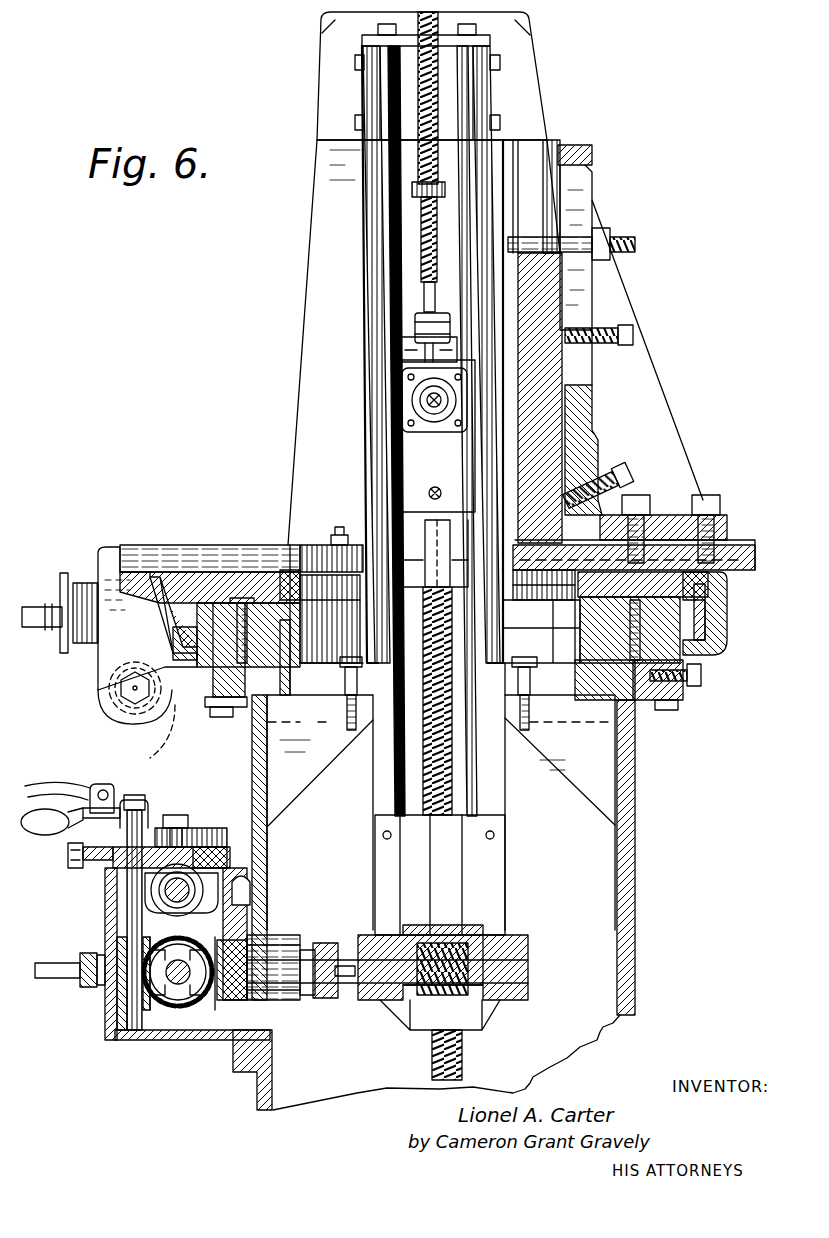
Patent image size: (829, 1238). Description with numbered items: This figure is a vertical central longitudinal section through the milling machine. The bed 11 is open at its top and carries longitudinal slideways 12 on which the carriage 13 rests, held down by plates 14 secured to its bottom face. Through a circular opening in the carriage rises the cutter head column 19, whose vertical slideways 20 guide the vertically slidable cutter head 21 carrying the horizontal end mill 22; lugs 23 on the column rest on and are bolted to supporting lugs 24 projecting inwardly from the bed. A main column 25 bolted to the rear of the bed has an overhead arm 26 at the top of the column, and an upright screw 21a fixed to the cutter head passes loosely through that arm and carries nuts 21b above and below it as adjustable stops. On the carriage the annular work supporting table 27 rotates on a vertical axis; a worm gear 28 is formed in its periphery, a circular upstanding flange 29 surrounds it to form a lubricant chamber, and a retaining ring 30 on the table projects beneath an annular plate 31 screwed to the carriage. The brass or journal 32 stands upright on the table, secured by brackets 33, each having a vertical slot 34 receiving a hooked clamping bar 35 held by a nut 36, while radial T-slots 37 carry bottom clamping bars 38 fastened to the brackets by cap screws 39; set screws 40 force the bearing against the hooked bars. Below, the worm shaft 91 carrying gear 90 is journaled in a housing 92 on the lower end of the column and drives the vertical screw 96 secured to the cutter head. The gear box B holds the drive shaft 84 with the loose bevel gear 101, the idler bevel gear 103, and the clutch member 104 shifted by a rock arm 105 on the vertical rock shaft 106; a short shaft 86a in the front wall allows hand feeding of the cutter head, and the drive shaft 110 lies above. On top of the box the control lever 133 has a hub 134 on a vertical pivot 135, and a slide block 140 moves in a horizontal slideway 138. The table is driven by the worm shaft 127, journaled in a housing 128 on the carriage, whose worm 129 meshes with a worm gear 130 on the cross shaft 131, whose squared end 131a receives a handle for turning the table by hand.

The overhead arm 26 is at (330, 40).
The upright screw 21a is at (415, 92).
The vertical slideways 20 is at (462, 92).
The main column 25 is at (318, 270).
The cutter head column 19 is at (365, 370).
The nuts 21b is at (410, 186).
The end mill 22 is at (432, 400).
The cutter head 21 is at (410, 455).
The vertical slot 34 is at (585, 283).
The clamping bar 35 is at (570, 240).
The nut 36 is at (612, 237).
The set screws 40 is at (633, 338).
The brackets 33 is at (592, 410).
The brass or journal 32 is at (548, 430).
The bottom clamping bars 38 is at (722, 532).
The cap screws 39 is at (703, 497).
The T-slots 37 is at (752, 565).
The work supporting table 27 is at (210, 580).
The annular plate 31 is at (700, 608).
The retaining ring 30 is at (710, 633).
The carriage 13 is at (688, 664).
The plates 14 is at (682, 700).
The longitudinal slideways 12 is at (630, 705).
The bed 11 is at (636, 770).
The supporting lugs 24 is at (312, 745).
The laterally projecting lugs 23 is at (340, 700).
The screw 96 is at (452, 790).
The housing 92 is at (520, 935).
The worm shaft 91 is at (380, 1002).
The gear 90 is at (325, 945).
The bevel gear 101 is at (205, 1035).
The gear box B is at (178, 1045).
The vertical rock shaft 106 is at (130, 905).
The control lever 133 is at (62, 790).
The vertical pivot 135 is at (168, 815).
The hub portion 134 is at (190, 828).
The slide block 140 is at (212, 845).
The horizontal slideway 138 is at (225, 862).
The drive shaft 110 is at (242, 890).
The bevel gear 103 is at (258, 912).
The drive shaft 84 is at (170, 975).
The clutch member 104 is at (165, 990).
The rock arm 105 is at (125, 1045).
The short horizontal shaft 86a is at (40, 963).
The squared end 131a is at (30, 607).
The worm gear shaft 131 is at (88, 583).
The worm gear 28 is at (165, 640).
The worm 129 is at (118, 690).
The housing 128 is at (100, 702).
The worm shaft 127 is at (133, 690).
The worm gear 130 is at (159, 737).
The circular upstanding flange 29 is at (178, 662).